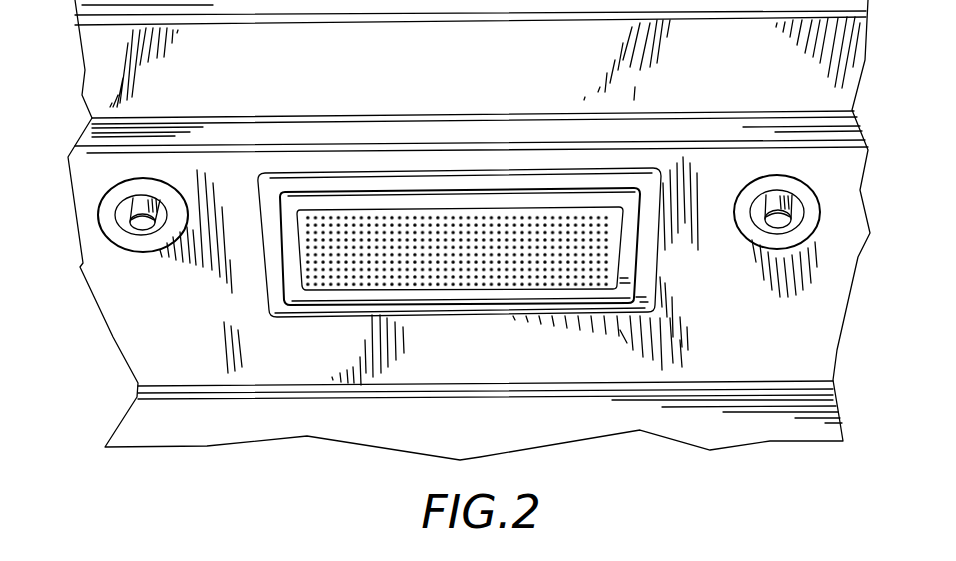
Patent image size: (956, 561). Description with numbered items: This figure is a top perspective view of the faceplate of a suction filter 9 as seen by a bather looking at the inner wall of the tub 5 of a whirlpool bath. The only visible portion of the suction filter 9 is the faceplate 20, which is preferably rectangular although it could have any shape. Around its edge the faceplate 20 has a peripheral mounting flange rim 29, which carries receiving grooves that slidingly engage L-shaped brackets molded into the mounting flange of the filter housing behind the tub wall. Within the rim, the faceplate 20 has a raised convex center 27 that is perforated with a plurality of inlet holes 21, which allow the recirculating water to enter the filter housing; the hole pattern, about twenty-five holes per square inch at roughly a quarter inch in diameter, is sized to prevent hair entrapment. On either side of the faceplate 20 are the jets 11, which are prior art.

The tub 5 is at (800, 320).
The suction filter 9 is at (443, 209).
The jets 11 is at (127, 232).
The faceplate 20 is at (650, 250).
The inlet holes 21 is at (608, 257).
The raised convex center 27 is at (304, 252).
The peripheral mounting flange rim 29 is at (267, 243).